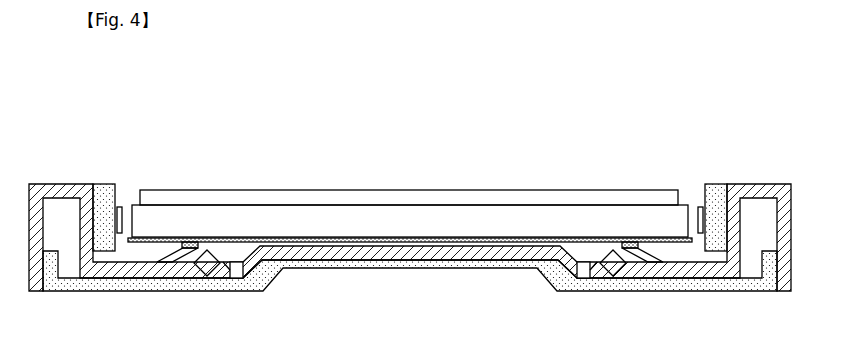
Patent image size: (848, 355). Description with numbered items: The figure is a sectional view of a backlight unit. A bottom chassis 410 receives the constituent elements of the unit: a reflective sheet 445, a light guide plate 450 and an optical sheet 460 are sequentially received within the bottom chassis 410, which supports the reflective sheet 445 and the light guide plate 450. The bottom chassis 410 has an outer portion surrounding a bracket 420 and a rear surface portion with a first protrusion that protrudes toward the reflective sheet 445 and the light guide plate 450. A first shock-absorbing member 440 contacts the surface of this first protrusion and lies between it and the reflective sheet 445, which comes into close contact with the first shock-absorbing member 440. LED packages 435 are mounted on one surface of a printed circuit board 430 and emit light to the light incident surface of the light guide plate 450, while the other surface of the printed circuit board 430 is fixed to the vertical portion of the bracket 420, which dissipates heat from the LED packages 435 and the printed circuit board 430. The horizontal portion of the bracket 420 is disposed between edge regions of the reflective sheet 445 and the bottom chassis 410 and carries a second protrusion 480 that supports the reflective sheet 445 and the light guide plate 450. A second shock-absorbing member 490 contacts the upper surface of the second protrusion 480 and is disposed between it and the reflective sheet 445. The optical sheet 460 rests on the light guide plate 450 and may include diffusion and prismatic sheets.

The bottom chassis 410 is at (123, 285).
The bracket 420 is at (93, 270).
The printed circuit board 430 is at (105, 185).
The LED packages 435 is at (121, 205).
The first shock-absorbing member 440 is at (330, 244).
The reflective sheet 445 is at (163, 265).
The light guide plate 450 is at (343, 215).
The optical sheet 460 is at (303, 197).
The second protrusion 480 is at (192, 262).
The second shock-absorbing member 490 is at (198, 246).